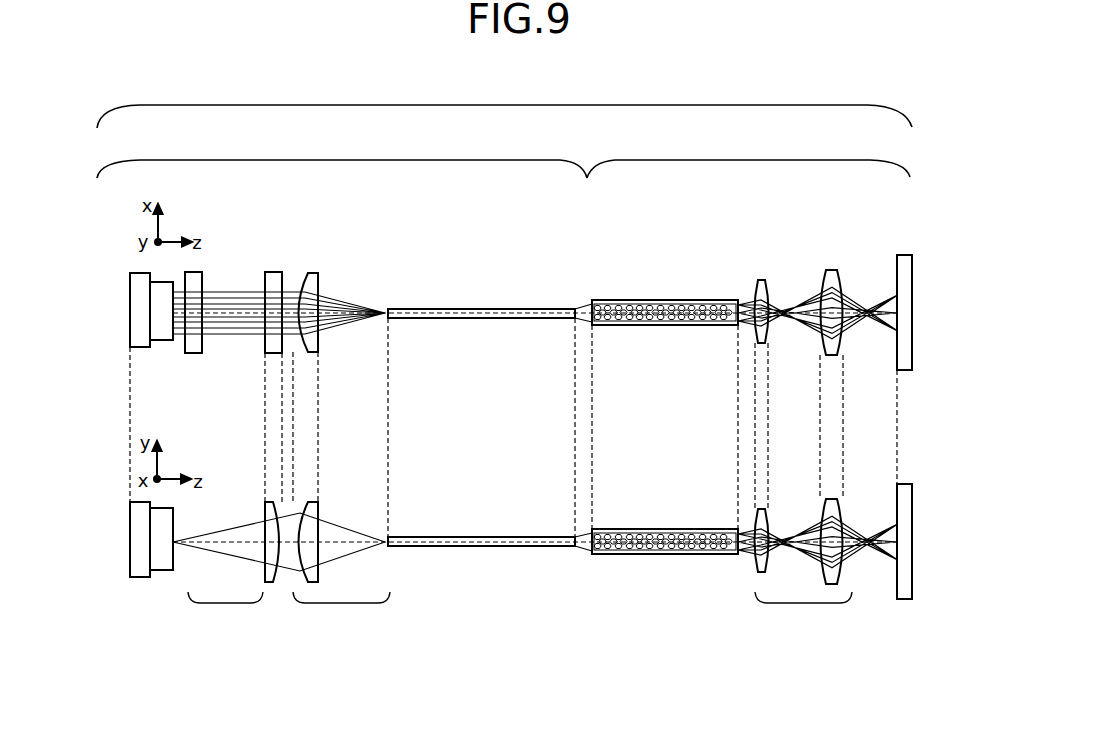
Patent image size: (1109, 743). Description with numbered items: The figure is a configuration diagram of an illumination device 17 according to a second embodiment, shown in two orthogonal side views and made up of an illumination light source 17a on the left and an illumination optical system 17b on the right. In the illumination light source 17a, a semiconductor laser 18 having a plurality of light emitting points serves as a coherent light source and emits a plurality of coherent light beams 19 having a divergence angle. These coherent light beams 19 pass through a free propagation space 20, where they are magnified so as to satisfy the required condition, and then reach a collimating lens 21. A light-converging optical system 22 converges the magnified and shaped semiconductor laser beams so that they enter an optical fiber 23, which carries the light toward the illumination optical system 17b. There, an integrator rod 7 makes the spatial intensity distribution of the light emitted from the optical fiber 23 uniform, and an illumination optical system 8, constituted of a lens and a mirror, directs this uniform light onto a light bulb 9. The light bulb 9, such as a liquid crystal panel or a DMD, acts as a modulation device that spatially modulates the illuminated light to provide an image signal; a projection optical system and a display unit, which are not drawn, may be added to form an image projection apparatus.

The illumination device 17 is at (542, 104).
The illumination light source 17a is at (347, 160).
The illumination optical system 17b is at (748, 160).
The semiconductor laser 18 is at (157, 577).
The coherent light beams 19 is at (238, 335).
The free propagation space 20 is at (240, 603).
The collimating lens 21 is at (272, 582).
The light-converging optical system 22 is at (348, 603).
The optical fiber 23 is at (478, 546).
The integrator rod 7 is at (662, 554).
The illumination optical system 8 is at (810, 603).
The light bulb 9 is at (905, 599).